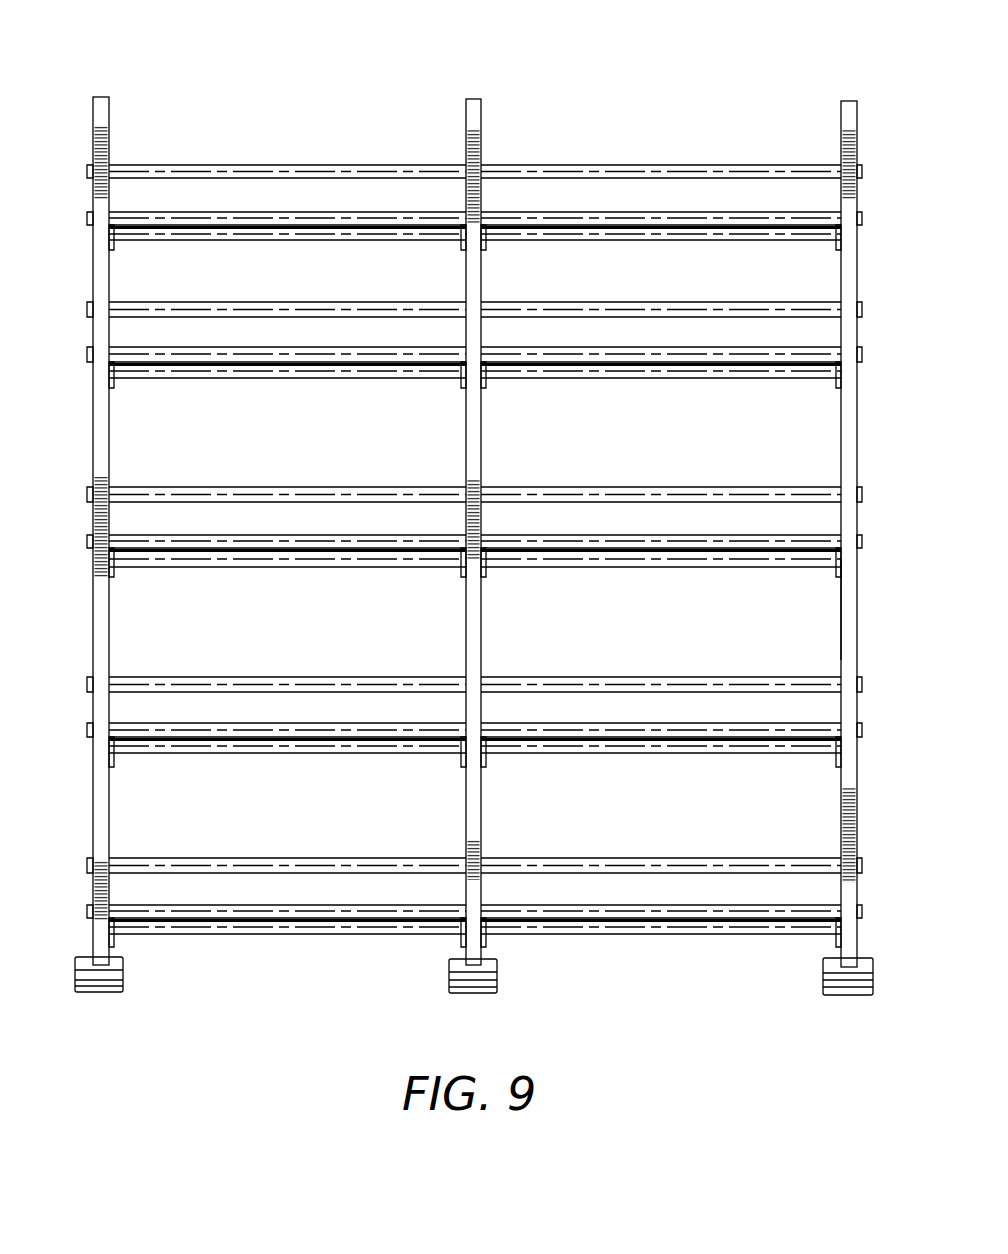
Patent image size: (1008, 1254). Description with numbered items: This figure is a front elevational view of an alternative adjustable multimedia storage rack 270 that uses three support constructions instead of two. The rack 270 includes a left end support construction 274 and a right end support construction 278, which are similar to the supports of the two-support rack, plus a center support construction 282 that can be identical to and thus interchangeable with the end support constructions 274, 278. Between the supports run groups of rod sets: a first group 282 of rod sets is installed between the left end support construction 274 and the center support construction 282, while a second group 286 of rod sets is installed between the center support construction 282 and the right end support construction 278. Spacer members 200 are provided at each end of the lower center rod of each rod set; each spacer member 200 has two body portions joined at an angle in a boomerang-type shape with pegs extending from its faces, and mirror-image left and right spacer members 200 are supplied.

The spacer member 200 is at (114, 247).
The adjustable multimedia storage rack 270 is at (863, 194).
The left end support construction 274 is at (92, 652).
The right end support construction 278 is at (852, 608).
The center support construction 282 is at (471, 120).
The second group of sets of rods 286 is at (657, 158).